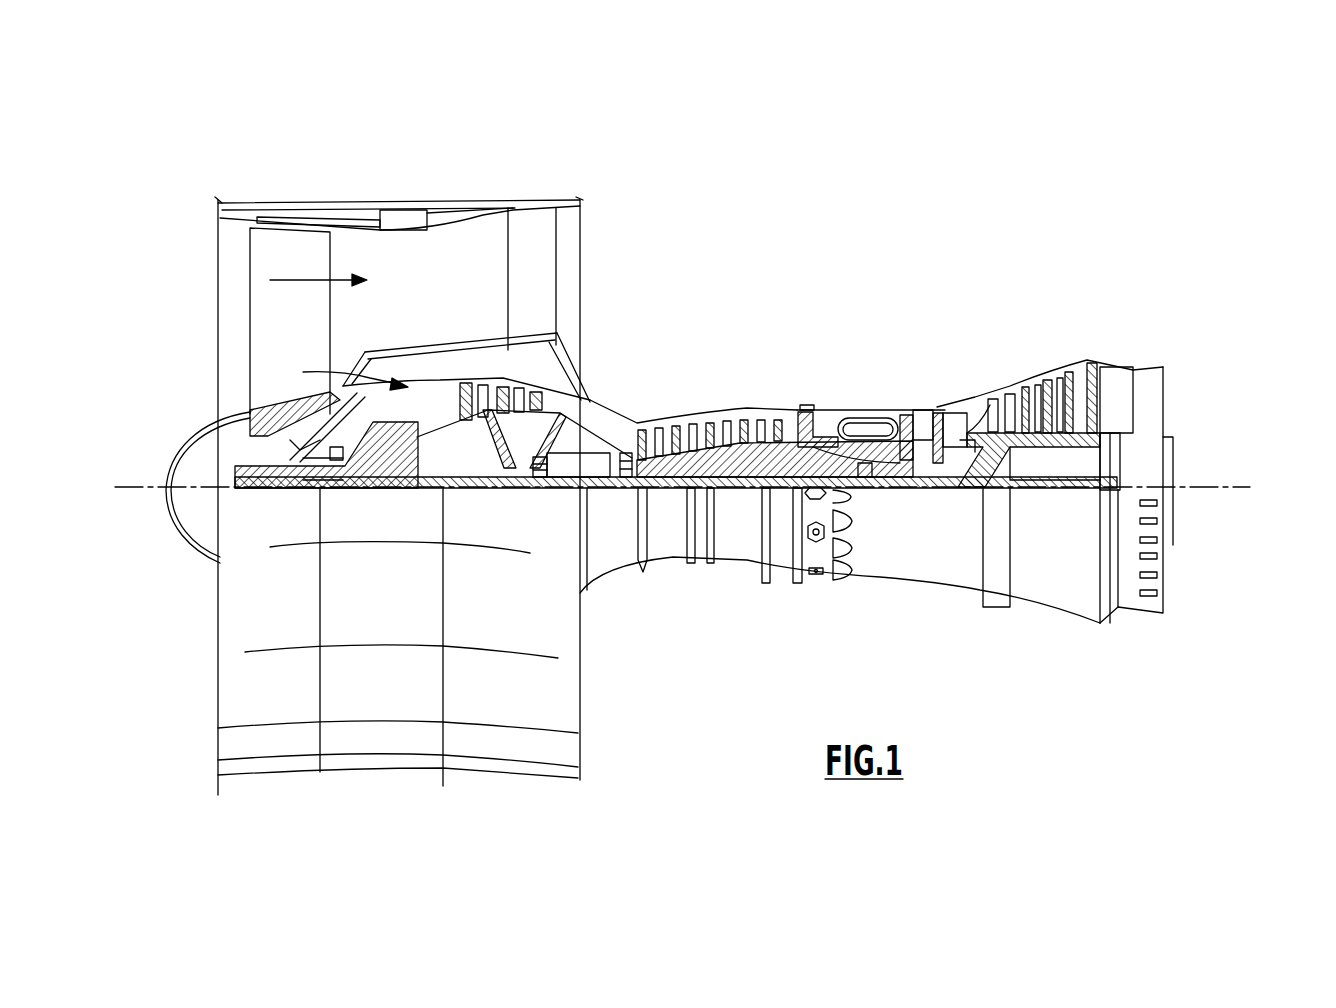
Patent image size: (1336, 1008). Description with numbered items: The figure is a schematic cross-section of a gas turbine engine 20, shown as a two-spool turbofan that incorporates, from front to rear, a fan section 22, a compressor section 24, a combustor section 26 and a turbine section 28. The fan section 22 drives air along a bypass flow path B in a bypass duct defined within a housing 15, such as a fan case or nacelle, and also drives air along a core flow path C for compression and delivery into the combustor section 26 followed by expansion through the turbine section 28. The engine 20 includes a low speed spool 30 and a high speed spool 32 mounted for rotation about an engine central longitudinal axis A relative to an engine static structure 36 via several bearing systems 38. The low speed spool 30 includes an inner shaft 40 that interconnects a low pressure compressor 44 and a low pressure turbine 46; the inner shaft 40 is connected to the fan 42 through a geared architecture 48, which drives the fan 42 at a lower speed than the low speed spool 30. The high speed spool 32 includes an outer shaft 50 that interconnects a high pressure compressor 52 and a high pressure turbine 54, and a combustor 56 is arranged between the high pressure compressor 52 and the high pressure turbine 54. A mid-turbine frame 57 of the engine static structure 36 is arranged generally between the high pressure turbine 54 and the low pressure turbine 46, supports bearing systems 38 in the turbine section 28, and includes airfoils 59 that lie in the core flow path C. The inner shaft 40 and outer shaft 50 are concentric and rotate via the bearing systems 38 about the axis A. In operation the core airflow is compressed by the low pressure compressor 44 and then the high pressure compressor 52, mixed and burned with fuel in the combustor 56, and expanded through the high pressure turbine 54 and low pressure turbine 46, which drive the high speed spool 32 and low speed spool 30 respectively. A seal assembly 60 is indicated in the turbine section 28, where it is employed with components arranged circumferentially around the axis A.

The housing 15 is at (401, 208).
The gas turbine engine 20 is at (862, 256).
The fan section 22 is at (331, 198).
The compressor section 24 is at (676, 413).
The combustor section 26 is at (874, 425).
The turbine section 28 is at (1055, 443).
The low speed spool 30 is at (740, 492).
The high speed spool 32 is at (783, 430).
The engine static structure 36 is at (781, 577).
The bearing systems 38 is at (538, 472).
The inner shaft 40 is at (610, 530).
The fan 42 is at (303, 334).
The low pressure compressor 44 is at (503, 400).
The low pressure turbine 46 is at (1047, 372).
The geared architecture 48 is at (407, 470).
The outer shaft 50 is at (859, 472).
The high pressure compressor 52 is at (722, 422).
The high pressure turbine 54 is at (921, 406).
The combustor 56 is at (858, 430).
The mid-turbine frame 57 is at (965, 394).
The airfoils 59 is at (981, 428).
The seal assembly 60 is at (985, 421).
The engine central longitudinal axis A is at (1254, 487).
The bypass flow path B is at (305, 278).
The core flow path C is at (345, 372).